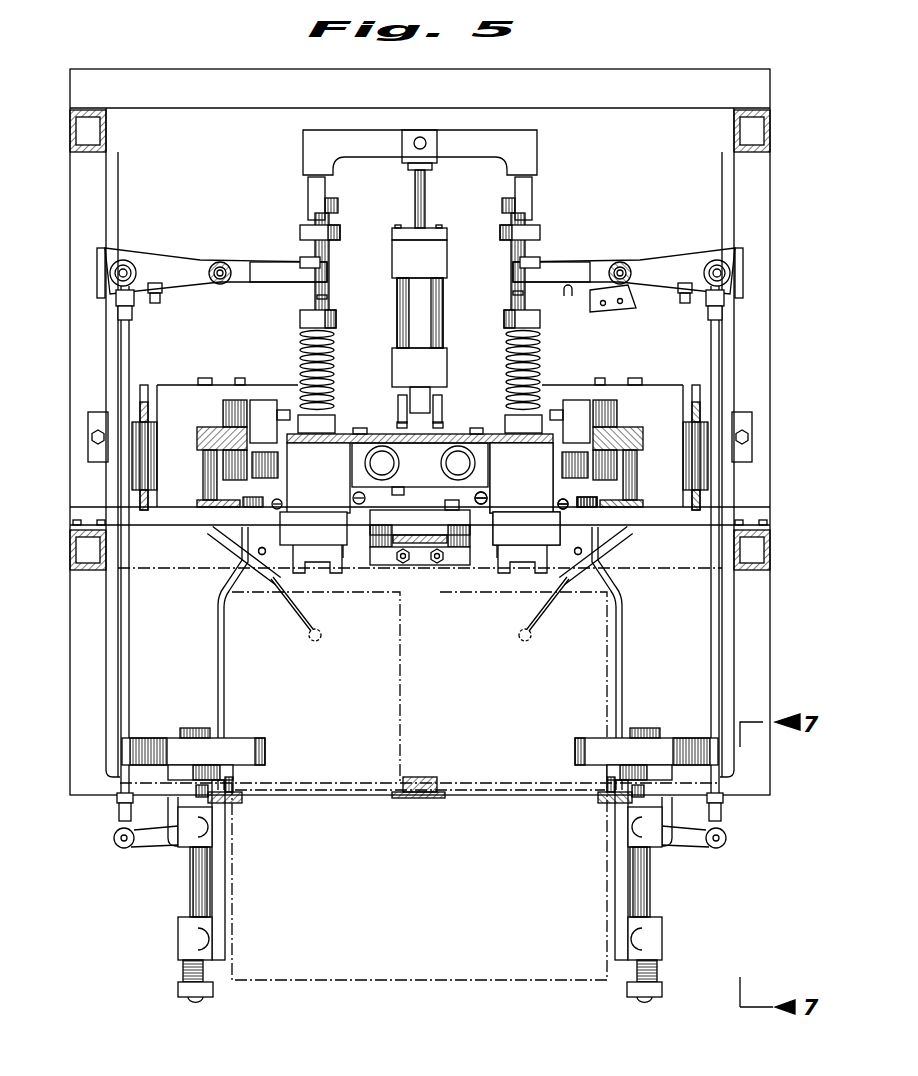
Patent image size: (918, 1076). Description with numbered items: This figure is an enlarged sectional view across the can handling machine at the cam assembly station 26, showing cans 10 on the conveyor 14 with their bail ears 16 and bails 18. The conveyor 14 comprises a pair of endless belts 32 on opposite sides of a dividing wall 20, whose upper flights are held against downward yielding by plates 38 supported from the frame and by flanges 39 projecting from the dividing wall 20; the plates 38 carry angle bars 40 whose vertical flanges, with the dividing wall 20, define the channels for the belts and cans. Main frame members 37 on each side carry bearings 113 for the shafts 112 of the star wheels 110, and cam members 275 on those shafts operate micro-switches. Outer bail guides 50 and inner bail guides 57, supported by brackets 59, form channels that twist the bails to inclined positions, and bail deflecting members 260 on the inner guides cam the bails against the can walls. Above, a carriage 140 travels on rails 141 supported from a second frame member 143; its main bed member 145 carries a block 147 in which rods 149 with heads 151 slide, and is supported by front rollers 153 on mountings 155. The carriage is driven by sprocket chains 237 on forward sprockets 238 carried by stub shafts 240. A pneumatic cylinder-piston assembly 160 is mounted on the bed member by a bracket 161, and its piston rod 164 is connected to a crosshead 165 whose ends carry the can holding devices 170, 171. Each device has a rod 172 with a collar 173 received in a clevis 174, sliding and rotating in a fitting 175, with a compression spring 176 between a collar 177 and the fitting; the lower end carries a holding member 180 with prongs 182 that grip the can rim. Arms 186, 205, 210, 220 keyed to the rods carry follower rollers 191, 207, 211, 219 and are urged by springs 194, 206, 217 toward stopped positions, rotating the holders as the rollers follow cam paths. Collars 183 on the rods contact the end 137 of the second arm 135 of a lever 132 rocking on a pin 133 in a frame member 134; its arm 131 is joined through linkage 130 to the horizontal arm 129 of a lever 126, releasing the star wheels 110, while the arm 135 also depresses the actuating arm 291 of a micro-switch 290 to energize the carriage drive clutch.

The cans 10 is at (440, 672).
The conveyor 14 is at (385, 985).
The bail ears 16 is at (315, 637).
The bails 18 is at (307, 626).
The dividing wall 20 is at (417, 777).
The cam assembly station 26 is at (183, 887).
The endless belts 32 is at (327, 791).
The main frame members 37 is at (217, 891).
The plates 38 is at (243, 800).
The flanges 39 is at (437, 798).
The angle bars 40 is at (233, 780).
The outer bail guides 50 is at (265, 578).
The inner bail guides 57 is at (272, 582).
The brackets 59 is at (177, 528).
The star wheels 110 is at (160, 742).
The shaft 112 is at (192, 906).
The bearings 113 is at (186, 834).
The lever 126 is at (175, 823).
The second substantially horizontal arm 129 is at (142, 843).
The linkage 130 is at (130, 613).
The arm 131 is at (170, 270).
The lever 132 is at (234, 262).
The pin 133 is at (219, 265).
The frame member 134 is at (128, 248).
The second arm 135 is at (268, 262).
The end 137 is at (316, 264).
The carriage 140 is at (380, 432).
The rails 141 is at (202, 438).
The second frame member 143 is at (673, 388).
The main bed member 145 is at (456, 436).
The block 147 is at (399, 485).
The rods 149 is at (450, 463).
The head 151 is at (365, 461).
The front rollers 153 is at (237, 402).
The mountings 155 is at (258, 402).
The pneumatic cylinder-piston assembly 160 is at (412, 329).
The bracket 161 is at (424, 400).
The piston rod 164 is at (426, 203).
The crosshead 165 is at (532, 143).
The can holding device 170 is at (510, 293).
The can holding device 171 is at (312, 297).
The rod 172 is at (330, 251).
The collar 173 is at (306, 209).
The clevis 174 is at (308, 193).
The fitting 175 is at (343, 538).
The compression spring 176 is at (300, 348).
The collar 177 is at (305, 318).
The holding member 180 is at (343, 558).
The prongs 182 is at (332, 573).
The collars 183 is at (337, 230).
The arm 186 is at (398, 522).
The follower roller 191 is at (372, 537).
The tension spring 194 is at (354, 496).
The arm 205 is at (452, 513).
The spring 206 is at (484, 501).
The roller 207 is at (450, 541).
The arm 210 is at (516, 525).
The roller 211 is at (576, 502).
The spring 217 is at (558, 505).
The roller 219 is at (250, 497).
The arm 220 is at (291, 517).
The sprocket chains 237 is at (157, 402).
The forward sprockets 238 is at (150, 465).
The stub shafts 240 is at (86, 436).
The bail deflecting members 260 is at (218, 655).
The cam members 275 is at (200, 797).
The micro-switch 290 is at (608, 312).
The actuating arm 291 is at (570, 298).